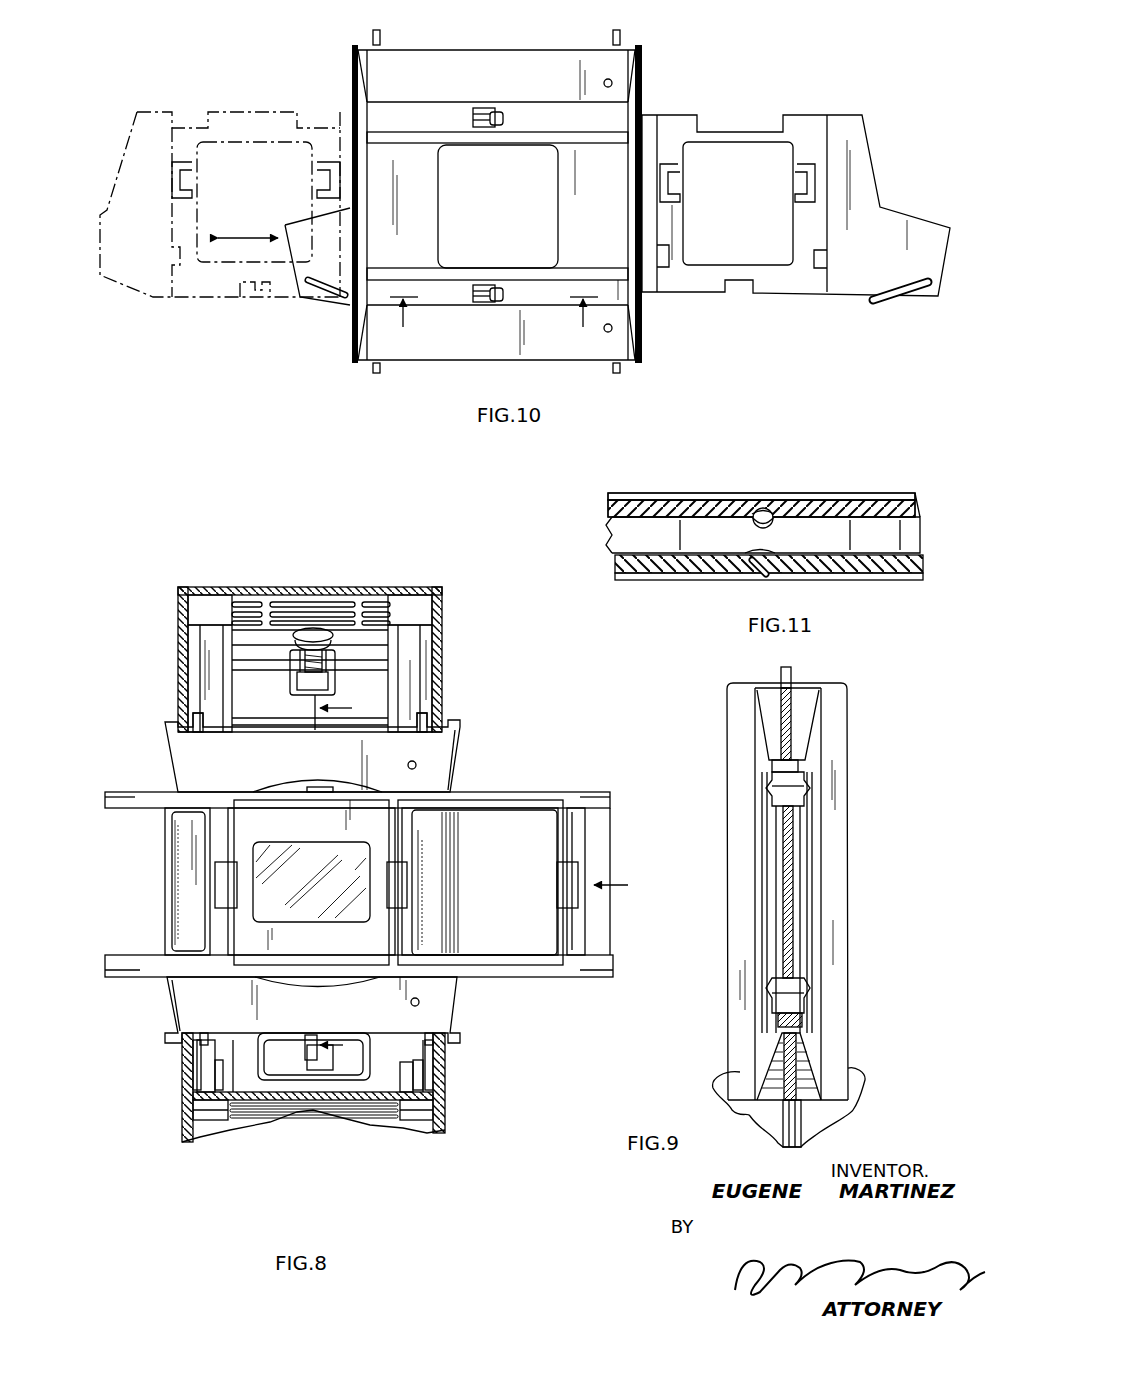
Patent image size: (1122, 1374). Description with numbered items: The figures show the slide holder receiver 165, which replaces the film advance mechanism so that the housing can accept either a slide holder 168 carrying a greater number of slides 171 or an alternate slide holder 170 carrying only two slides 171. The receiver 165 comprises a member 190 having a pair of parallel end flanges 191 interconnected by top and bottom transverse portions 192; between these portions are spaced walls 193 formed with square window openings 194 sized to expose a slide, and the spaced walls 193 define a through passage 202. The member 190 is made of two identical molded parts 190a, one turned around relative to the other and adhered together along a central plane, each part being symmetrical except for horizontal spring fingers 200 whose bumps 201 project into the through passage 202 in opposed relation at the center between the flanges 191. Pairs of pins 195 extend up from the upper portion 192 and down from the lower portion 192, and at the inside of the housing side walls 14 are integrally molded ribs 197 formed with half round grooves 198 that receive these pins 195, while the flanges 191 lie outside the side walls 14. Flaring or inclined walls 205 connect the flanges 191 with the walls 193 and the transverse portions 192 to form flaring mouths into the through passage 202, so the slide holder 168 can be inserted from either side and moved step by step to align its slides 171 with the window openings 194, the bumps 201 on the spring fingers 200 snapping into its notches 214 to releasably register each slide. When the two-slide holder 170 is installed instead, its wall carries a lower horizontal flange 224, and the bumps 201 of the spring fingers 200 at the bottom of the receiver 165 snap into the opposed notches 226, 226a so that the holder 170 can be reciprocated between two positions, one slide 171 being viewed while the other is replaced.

In FIG. 8, the side walls 14 is at (190, 1122).
In FIG. 10, the slide holder receiver 165 is at (340, 343).
In FIG. 9, the slide holder receiver 165 is at (795, 904).
In FIG. 8, the slide holder receiver 165 is at (468, 757).
In FIG. 9, the slide holder 168 is at (790, 1018).
In FIG. 8, the slide holder 168 is at (366, 859).
In FIG. 10, the slide holder 170 is at (767, 312).
In FIG. 11, the slide holder 170 is at (600, 542).
In FIG. 8, the slides 171 is at (323, 832).
In FIG. 8, the member 190 is at (462, 734).
In FIG. 9, the molded parts 190a is at (852, 710).
In FIG. 9, the end flanges 191 is at (838, 817).
In FIG. 9, the top and bottom transverse portions 192 is at (798, 700).
In FIG. 8, the top and bottom transverse portions 192 is at (317, 677).
In FIG. 11, the spaced walls 193 is at (648, 508).
In FIG. 9, the spaced walls 193 is at (764, 832).
In FIG. 9, the window openings 194 is at (775, 978).
In FIG. 10, the pins 195 is at (378, 30).
In FIG. 9, the pins 195 is at (781, 668).
In FIG. 8, the pins 195 is at (423, 713).
In FIG. 9, the ribs 197 is at (853, 1110).
In FIG. 8, the ribs 197 is at (190, 1068).
In FIG. 9, the half round grooves 198 is at (783, 1142).
In FIG. 8, the half round grooves 198 is at (202, 1073).
In FIG. 10, the spring fingers 200 is at (492, 110).
In FIG. 11, the spring fingers 200 is at (722, 508).
In FIG. 10, the bumps 201 is at (503, 118).
In FIG. 11, the bumps 201 is at (752, 524).
In FIG. 11, the through passage 202 is at (843, 510).
In FIG. 9, the through passage 202 is at (803, 873).
In FIG. 9, the flaring walls 205 is at (808, 705).
In FIG. 9, the notches 214 is at (795, 770).
In FIG. 11, the lower horizontal flange 224 is at (912, 537).
In FIG. 11, the notches 226 is at (750, 562).
In FIG. 11, the notches 226a is at (778, 516).